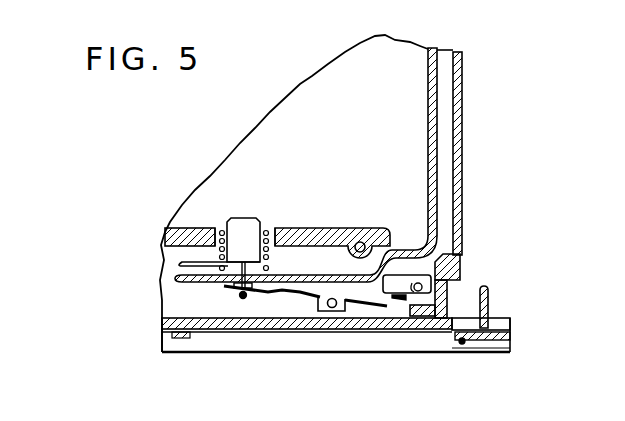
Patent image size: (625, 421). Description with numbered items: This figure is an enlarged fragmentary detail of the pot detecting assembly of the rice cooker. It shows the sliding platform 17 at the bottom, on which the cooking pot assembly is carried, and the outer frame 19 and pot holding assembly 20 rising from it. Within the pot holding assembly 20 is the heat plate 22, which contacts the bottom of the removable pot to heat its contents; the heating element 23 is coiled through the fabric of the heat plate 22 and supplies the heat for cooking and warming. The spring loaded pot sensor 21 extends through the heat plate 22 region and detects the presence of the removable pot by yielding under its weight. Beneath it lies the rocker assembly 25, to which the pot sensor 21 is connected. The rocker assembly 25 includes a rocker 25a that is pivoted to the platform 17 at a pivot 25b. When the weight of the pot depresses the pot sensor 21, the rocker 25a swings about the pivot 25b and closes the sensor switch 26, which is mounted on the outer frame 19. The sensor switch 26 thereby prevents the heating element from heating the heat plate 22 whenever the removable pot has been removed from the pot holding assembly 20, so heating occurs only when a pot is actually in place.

The platform 17 is at (453, 329).
The outer frame 19 is at (462, 196).
The pot holding assembly 20 is at (439, 108).
The pot sensor 21 is at (182, 266).
The heat plate 22 is at (180, 230).
The heating element 23 is at (363, 241).
The rocker assembly 25 is at (278, 296).
The rocker 25a is at (311, 302).
The pivot 25b is at (332, 298).
The sensor switch 26 is at (452, 262).